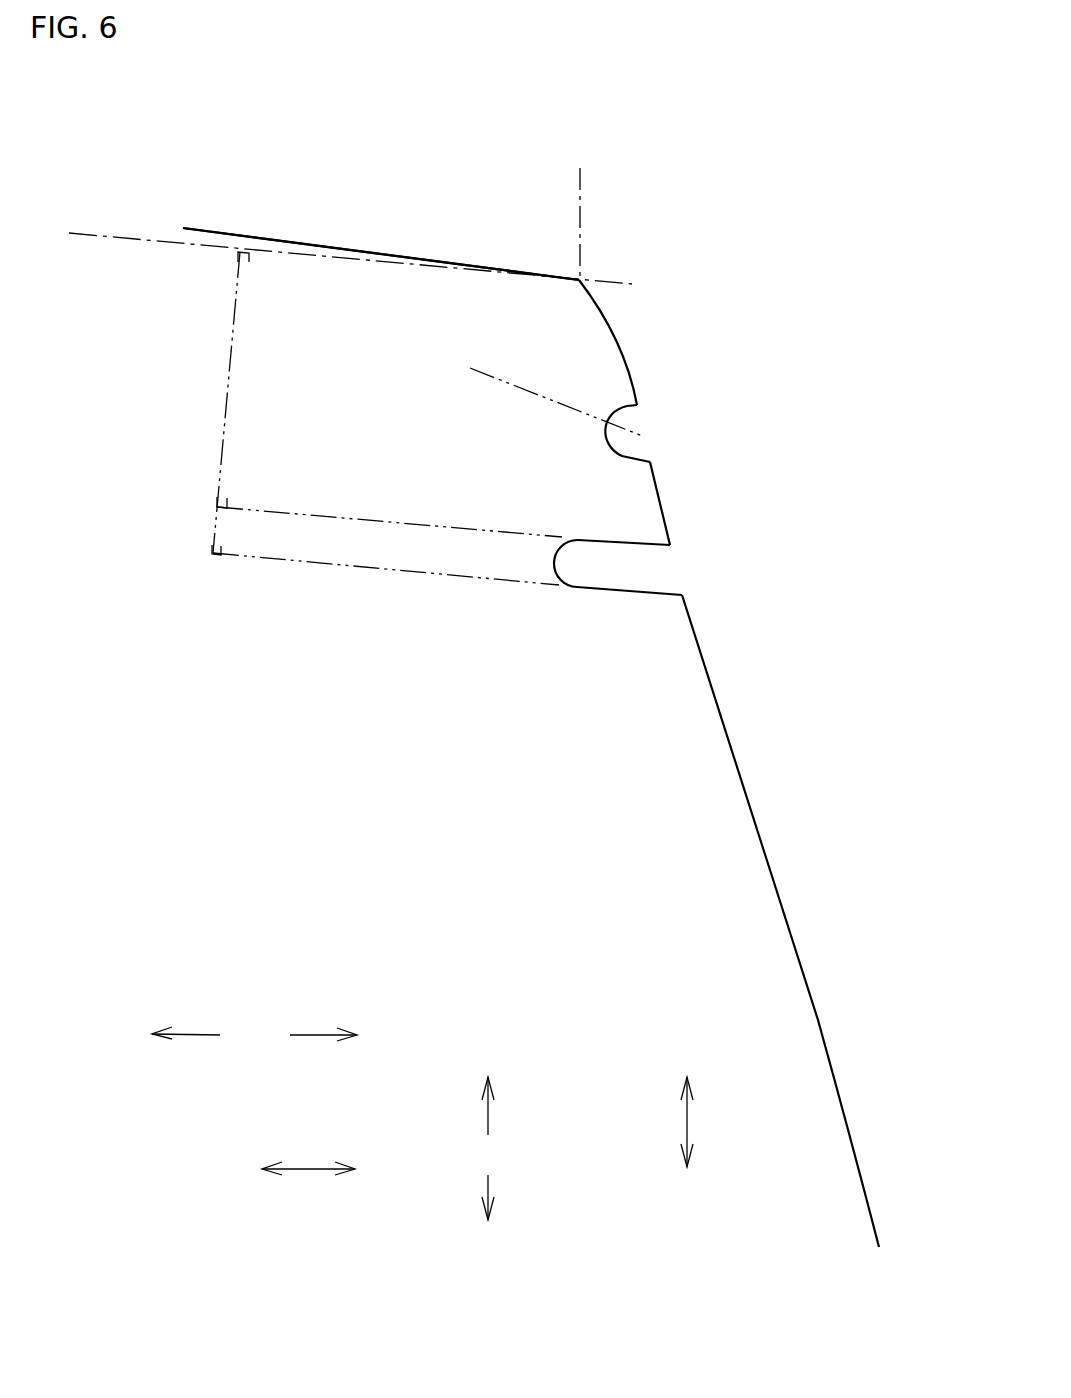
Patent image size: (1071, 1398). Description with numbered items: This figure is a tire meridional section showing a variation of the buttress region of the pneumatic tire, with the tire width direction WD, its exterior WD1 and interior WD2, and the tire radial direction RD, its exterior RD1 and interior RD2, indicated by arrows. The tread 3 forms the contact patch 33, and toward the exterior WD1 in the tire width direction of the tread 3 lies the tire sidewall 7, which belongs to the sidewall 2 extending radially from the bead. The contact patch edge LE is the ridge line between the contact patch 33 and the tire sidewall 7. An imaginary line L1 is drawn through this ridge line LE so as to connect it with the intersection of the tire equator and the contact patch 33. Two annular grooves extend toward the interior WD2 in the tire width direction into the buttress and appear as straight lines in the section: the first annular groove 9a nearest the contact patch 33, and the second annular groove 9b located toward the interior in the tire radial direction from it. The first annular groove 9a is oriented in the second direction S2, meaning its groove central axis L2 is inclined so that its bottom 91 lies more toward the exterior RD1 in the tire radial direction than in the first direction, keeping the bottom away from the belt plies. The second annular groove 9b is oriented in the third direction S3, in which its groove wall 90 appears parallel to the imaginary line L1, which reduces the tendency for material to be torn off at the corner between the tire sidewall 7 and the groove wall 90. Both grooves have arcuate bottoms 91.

The sidewall 2 is at (872, 997).
The tread 3 is at (204, 200).
The contact patch 33 is at (283, 241).
The tire sidewall 7 is at (661, 498).
The first annular groove 9a is at (648, 425).
The second annular groove 9b is at (684, 553).
The groove wall 90 is at (632, 570).
The groove bottom 91 is at (617, 408).
The third direction S3 is at (622, 540).
The imaginary line L1 is at (623, 283).
The groove central axis L2 is at (555, 411).
The second direction S2 is at (505, 383).
The contact patch edge LE is at (581, 210).
The tire width direction WD is at (308, 1188).
The exterior in the tire width direction WD1 is at (326, 1051).
The interior in the tire width direction WD2 is at (191, 1051).
The tire radial direction RD is at (709, 1122).
The exterior in the tire radial direction RD1 is at (519, 1108).
The interior in the tire radial direction RD2 is at (519, 1197).